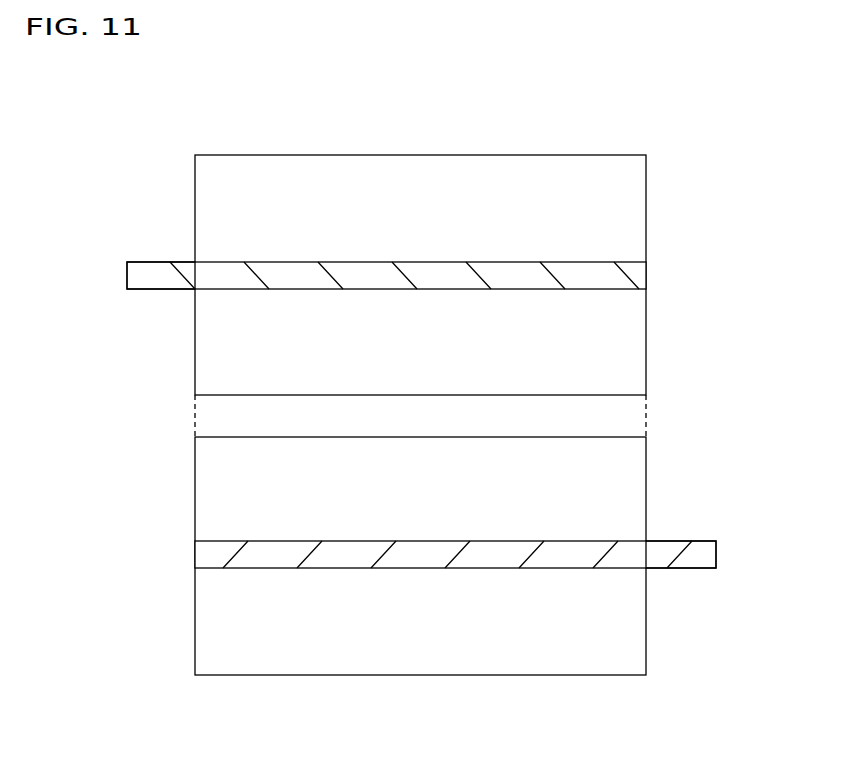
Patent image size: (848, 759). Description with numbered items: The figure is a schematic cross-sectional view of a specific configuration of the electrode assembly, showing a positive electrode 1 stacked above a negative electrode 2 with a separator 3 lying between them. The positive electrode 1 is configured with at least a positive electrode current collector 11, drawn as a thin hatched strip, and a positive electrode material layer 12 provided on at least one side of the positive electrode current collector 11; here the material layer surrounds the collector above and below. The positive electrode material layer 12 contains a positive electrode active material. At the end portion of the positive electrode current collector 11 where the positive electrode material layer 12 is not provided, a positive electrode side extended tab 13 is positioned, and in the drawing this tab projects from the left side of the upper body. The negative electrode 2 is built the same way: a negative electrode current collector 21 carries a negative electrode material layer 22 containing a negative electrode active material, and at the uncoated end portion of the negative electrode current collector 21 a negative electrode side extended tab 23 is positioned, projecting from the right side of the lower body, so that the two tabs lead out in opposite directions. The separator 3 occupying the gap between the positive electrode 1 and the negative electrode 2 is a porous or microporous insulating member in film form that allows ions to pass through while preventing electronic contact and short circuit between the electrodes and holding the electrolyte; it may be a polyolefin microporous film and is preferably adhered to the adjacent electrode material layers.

The positive electrode 1 is at (379, 275).
The positive electrode current collector 11 is at (136, 272).
The positive electrode material layer 12 is at (225, 224).
The positive electrode side extended tab 13 is at (152, 282).
The negative electrode 2 is at (465, 556).
The negative electrode current collector 21 is at (705, 554).
The negative electrode material layer 22 is at (615, 499).
The negative electrode side extended tab 23 is at (689, 570).
The separator 3 is at (630, 417).